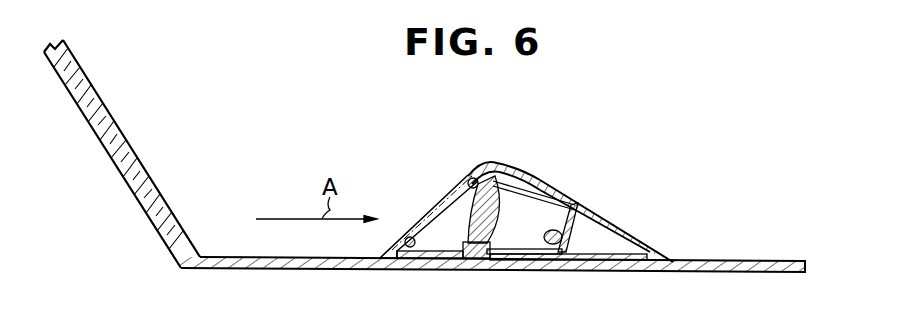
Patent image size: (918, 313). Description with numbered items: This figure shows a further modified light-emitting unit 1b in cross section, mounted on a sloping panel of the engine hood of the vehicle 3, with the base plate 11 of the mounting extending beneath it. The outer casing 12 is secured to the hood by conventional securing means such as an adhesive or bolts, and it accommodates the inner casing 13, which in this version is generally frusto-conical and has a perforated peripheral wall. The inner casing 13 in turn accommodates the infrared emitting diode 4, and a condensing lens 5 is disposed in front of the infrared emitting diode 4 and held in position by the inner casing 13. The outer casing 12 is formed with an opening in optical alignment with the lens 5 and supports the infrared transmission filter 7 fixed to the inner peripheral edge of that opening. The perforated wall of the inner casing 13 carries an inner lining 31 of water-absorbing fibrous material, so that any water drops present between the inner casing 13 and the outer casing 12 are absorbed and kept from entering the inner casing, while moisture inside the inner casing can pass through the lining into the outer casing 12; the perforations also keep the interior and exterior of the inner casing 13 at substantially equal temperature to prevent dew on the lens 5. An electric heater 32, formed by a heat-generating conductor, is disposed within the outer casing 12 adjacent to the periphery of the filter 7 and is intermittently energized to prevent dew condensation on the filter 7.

The inclined panel 11 is at (150, 172).
The vehicle 3 is at (700, 261).
The infrared transmission filter 7 is at (447, 194).
The condensing lens 5 is at (481, 211).
The light-emitting unit 1b is at (478, 164).
The outer casing 12 is at (492, 166).
The infrared emitting diode 4 is at (580, 200).
The inner casing 13 is at (520, 186).
The inner lining 31 is at (554, 186).
The electric heater 32 is at (444, 212).